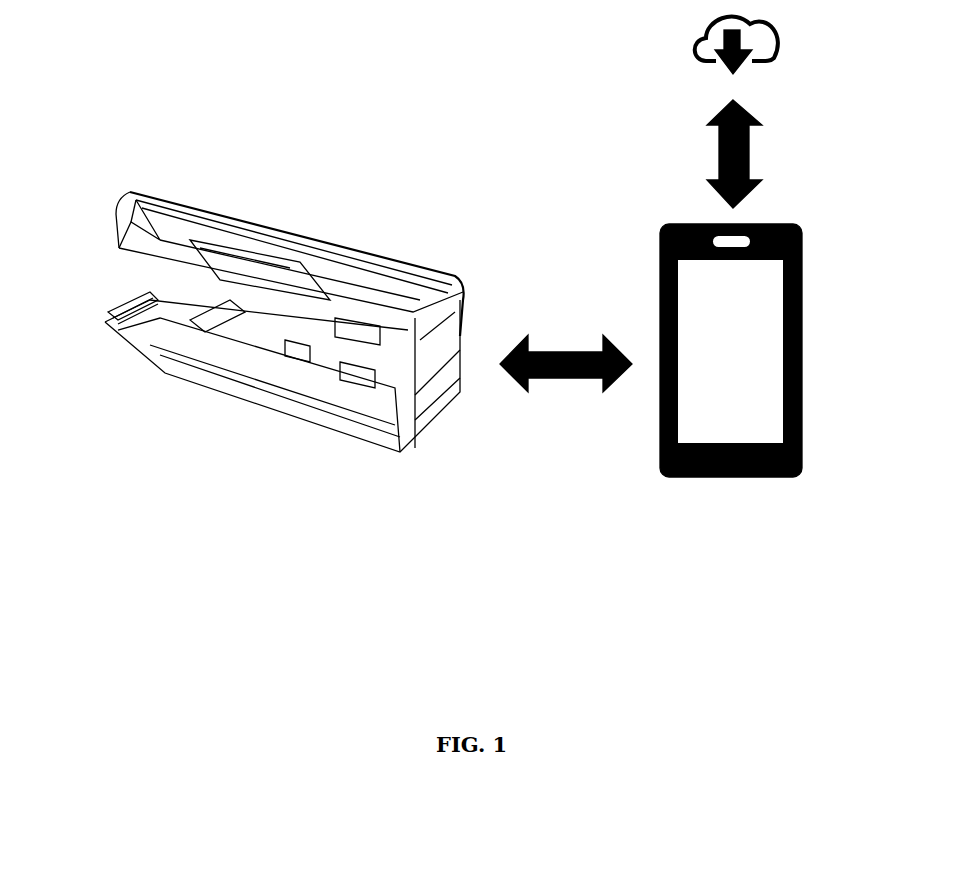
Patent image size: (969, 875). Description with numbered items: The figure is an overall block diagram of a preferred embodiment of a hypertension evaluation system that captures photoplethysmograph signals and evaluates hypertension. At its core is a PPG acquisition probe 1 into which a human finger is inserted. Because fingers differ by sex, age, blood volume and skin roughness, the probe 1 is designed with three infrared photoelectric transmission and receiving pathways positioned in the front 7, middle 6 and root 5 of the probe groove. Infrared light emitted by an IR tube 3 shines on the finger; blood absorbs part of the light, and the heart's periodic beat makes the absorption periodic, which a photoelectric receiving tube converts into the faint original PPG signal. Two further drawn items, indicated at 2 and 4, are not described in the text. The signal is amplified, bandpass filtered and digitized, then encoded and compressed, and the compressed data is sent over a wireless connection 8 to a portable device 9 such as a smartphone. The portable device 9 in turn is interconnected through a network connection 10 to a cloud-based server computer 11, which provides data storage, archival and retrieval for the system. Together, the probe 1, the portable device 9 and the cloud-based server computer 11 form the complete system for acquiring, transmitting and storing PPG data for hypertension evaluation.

The PPG acquisition probe 1 is at (203, 205).
The communication module 2 is at (353, 332).
The IR tube 3 is at (275, 272).
The connector ports 4 is at (130, 315).
The root photoelectric pathway 5 is at (252, 332).
The middle photoelectric pathway 6 is at (298, 355).
The front photoelectric pathway 7 is at (355, 372).
The wireless connection 8 is at (566, 369).
The portable device 9 is at (802, 408).
The network connection 10 is at (739, 154).
The cloud-based server computer 11 is at (753, 45).